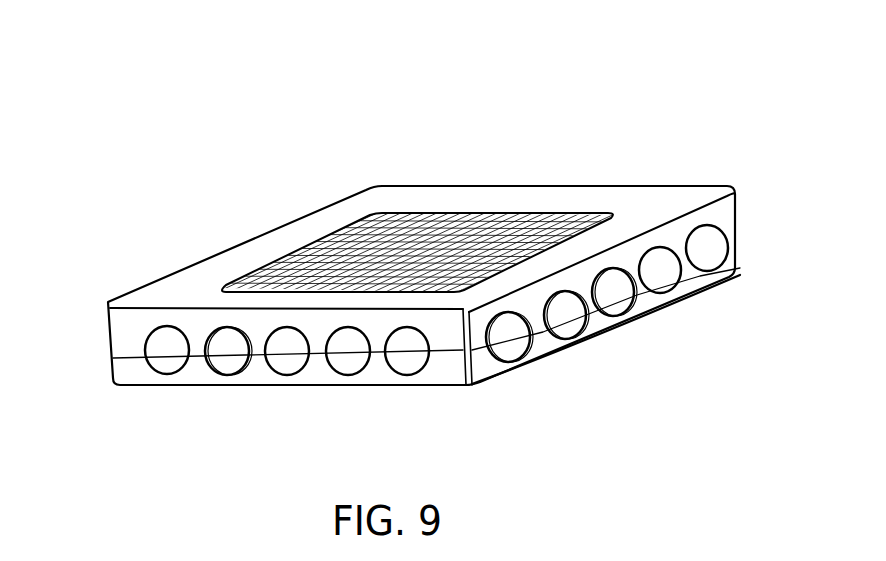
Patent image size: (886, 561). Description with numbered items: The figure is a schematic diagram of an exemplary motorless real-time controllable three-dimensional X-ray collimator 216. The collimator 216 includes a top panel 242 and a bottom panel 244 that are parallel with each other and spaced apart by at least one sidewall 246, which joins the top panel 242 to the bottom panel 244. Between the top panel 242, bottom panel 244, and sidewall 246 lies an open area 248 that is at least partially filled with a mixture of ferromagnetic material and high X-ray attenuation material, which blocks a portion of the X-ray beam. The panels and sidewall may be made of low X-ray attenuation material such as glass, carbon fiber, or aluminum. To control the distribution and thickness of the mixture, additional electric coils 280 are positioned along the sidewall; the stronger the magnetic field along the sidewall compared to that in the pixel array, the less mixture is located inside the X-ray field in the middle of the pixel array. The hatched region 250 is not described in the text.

The motorless real-time controllable 3D X-ray collimator 216 is at (433, 242).
The top panel 242 is at (391, 284).
The bottom panel 244 is at (237, 387).
The sidewall 246 is at (127, 348).
The open area 248 is at (452, 370).
The mesh panel 250 is at (422, 253).
The additional electric coils 280 is at (625, 315).